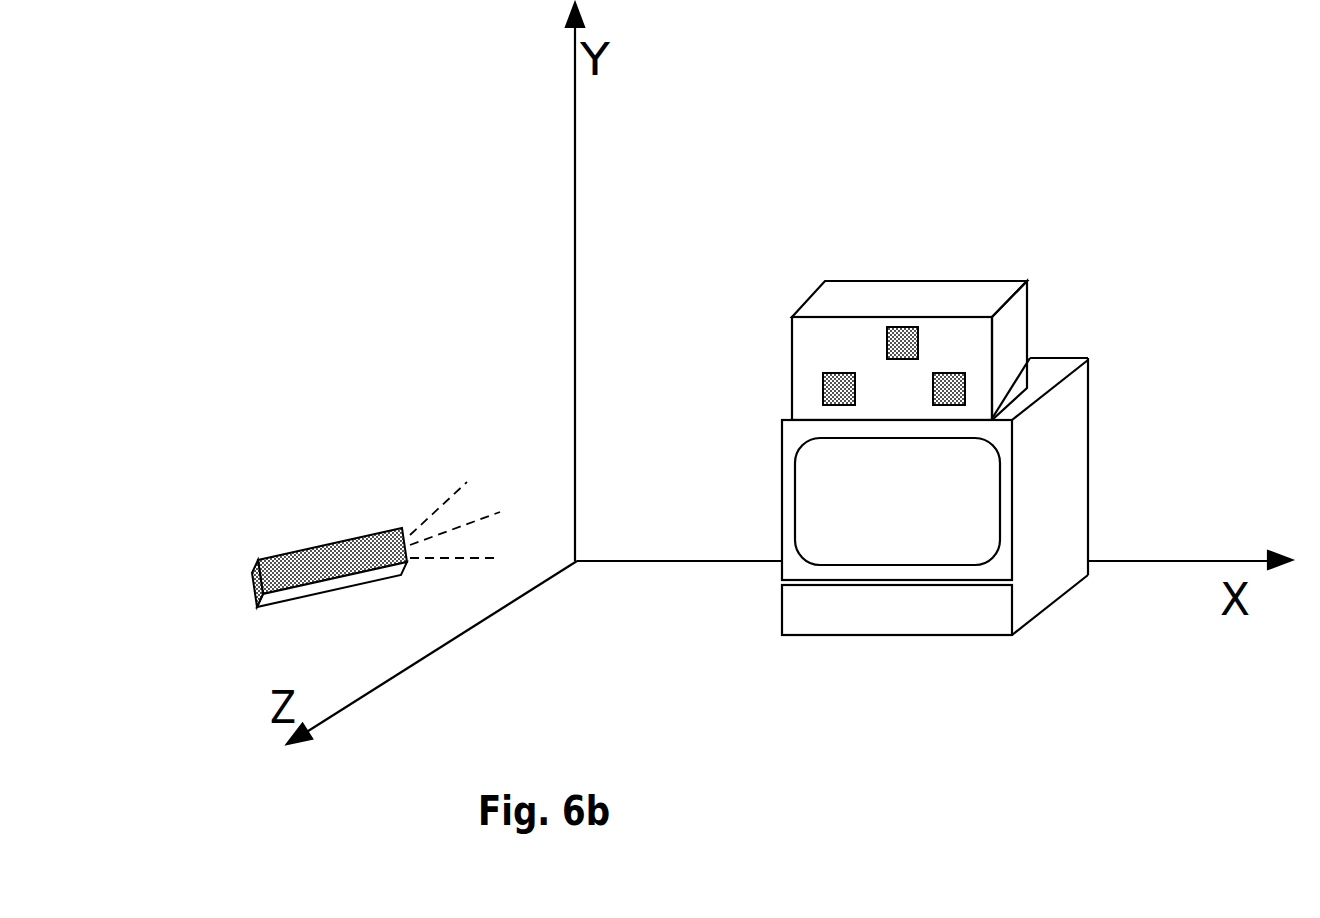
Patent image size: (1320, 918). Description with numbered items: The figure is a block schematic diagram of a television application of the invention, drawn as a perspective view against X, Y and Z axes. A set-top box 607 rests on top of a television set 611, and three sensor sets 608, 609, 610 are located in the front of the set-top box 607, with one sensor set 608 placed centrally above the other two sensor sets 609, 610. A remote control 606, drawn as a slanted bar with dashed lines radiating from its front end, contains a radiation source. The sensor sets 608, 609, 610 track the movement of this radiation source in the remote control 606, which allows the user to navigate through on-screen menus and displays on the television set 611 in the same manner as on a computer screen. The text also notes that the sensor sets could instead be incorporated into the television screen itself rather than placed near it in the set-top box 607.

The remote control 606 is at (318, 534).
The set-top box 607 is at (882, 258).
The sensor set 608 is at (921, 311).
The sensor set 609 is at (793, 359).
The sensor set 610 is at (985, 376).
The television set 611 is at (1055, 638).